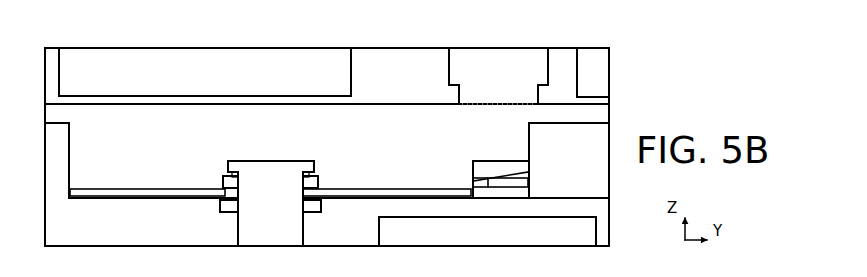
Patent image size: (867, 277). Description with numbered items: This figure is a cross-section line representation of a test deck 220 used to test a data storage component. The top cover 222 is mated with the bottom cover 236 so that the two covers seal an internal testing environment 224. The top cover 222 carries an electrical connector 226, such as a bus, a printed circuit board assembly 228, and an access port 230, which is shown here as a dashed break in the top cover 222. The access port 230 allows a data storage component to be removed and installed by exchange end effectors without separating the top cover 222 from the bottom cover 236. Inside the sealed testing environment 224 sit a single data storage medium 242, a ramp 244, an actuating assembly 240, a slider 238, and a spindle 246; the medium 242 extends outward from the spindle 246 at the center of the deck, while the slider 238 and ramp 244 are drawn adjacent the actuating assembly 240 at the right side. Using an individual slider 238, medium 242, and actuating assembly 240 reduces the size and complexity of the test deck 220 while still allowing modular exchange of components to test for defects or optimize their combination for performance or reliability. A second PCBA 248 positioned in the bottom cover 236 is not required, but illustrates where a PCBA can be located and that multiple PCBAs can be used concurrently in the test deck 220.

The test deck 220 is at (104, 34).
The top cover 222 is at (405, 76).
The testing environment 224 is at (264, 118).
The electrical connector 226 is at (604, 47).
The printed circuit board assembly 228 is at (205, 72).
The access port 230 is at (518, 43).
The bottom cover 236 is at (327, 222).
The slider 238 is at (511, 173).
The actuator assembly 240 is at (569, 160).
The data storage medium 242 is at (118, 183).
The ramp 244 is at (470, 161).
The spindle 246 is at (270, 203).
The second PCBA 248 is at (487, 231).